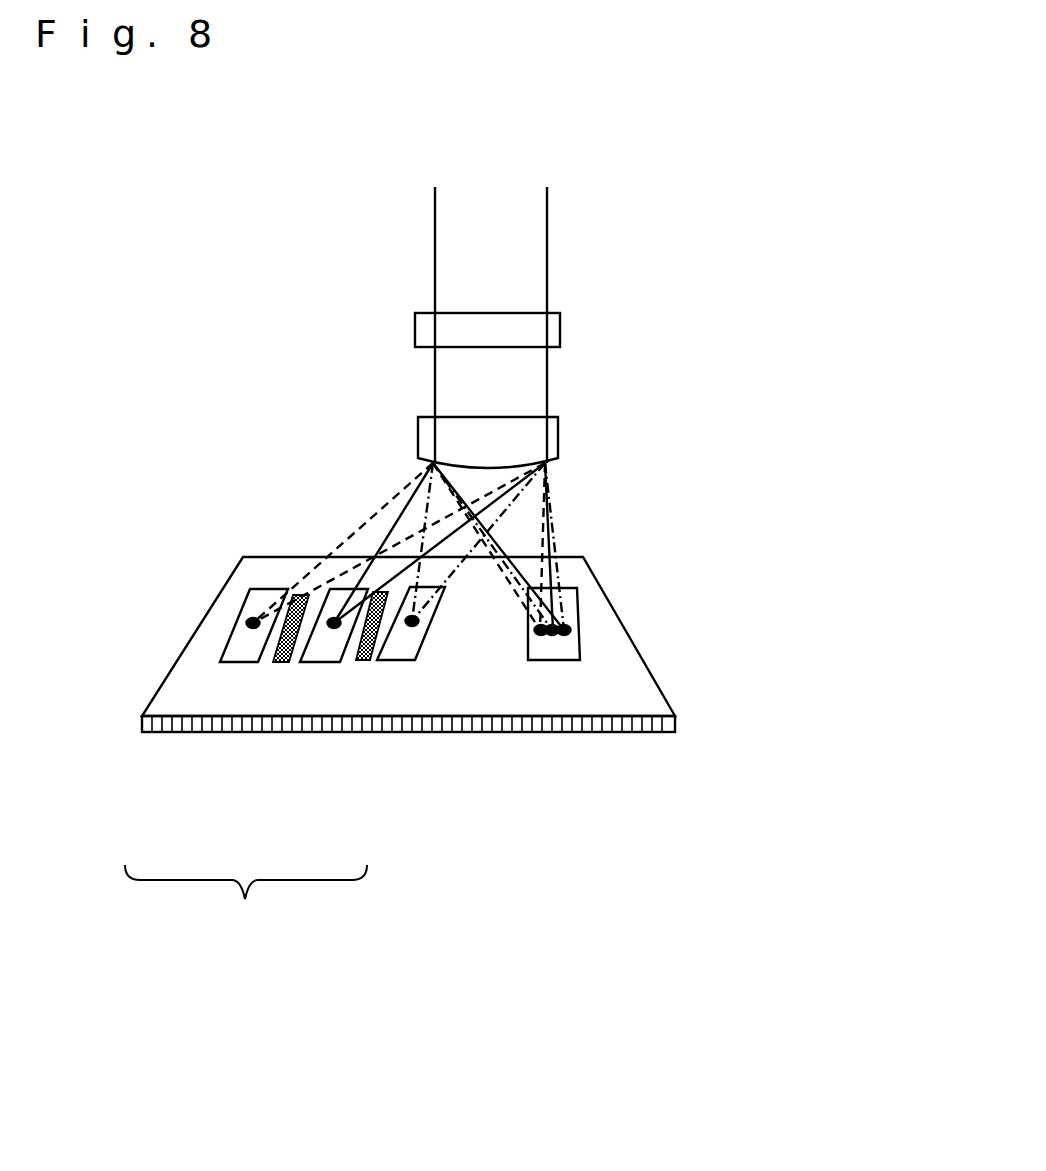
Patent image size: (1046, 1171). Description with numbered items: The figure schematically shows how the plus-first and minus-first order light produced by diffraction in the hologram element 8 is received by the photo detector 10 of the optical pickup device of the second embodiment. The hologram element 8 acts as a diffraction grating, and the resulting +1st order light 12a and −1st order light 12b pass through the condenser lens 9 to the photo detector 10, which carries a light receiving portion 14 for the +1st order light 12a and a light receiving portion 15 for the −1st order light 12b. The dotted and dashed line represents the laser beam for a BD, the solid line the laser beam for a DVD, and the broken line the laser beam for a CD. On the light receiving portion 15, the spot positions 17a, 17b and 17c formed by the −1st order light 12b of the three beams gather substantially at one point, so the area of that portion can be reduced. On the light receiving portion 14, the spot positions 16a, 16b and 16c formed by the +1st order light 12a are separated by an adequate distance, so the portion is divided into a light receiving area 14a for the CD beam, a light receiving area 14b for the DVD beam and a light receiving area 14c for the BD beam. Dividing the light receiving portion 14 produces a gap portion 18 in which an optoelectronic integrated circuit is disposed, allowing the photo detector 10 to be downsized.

The hologram element 8 is at (562, 318).
The condenser lens 9 is at (558, 428).
The photo detector 10 is at (653, 673).
The +1st order light 12a is at (425, 507).
The −1st order light 12b is at (562, 588).
The light receiving portion 14 is at (246, 907).
The light receiving area 14a is at (232, 652).
The light receiving area 14b is at (309, 662).
The light receiving area 14c is at (393, 650).
The light receiving portion 15 is at (575, 610).
The spot position 16a is at (253, 623).
The spot position 16b is at (334, 623).
The spot position 16c is at (412, 621).
The spot position 17a is at (541, 630).
The spot position 17b is at (566, 632).
The spot position 17c is at (552, 630).
The gap portion 18 is at (360, 613).